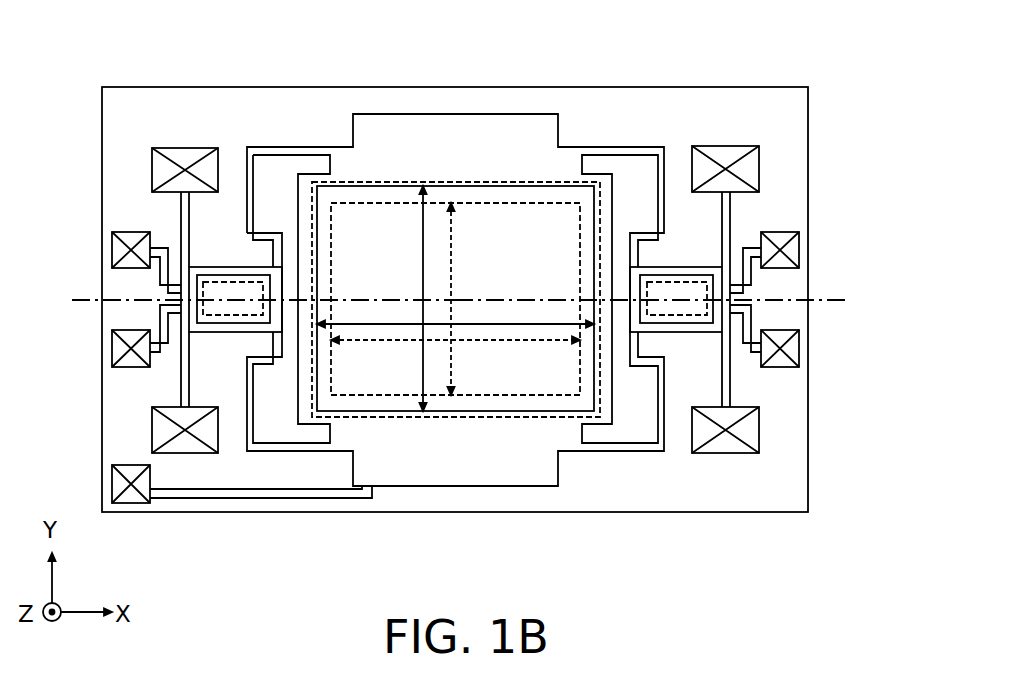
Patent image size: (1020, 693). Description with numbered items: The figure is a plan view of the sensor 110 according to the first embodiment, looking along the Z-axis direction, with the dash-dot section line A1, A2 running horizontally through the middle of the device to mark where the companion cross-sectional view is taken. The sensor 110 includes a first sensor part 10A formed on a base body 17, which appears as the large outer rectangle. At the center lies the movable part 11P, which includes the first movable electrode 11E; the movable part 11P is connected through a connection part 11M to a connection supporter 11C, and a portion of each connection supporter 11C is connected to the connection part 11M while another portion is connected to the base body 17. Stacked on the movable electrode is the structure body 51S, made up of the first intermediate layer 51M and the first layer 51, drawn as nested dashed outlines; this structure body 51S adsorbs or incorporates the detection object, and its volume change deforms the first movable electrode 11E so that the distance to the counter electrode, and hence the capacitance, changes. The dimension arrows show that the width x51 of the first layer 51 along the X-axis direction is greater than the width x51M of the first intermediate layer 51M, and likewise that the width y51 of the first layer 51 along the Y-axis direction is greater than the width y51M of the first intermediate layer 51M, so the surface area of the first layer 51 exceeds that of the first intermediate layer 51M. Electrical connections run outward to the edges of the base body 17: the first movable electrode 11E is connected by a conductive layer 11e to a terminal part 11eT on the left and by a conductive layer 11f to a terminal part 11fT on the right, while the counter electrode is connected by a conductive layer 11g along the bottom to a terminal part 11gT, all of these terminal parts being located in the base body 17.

The first sensor part 10A is at (755, 85).
The sensor 110 is at (818, 75).
The base body 17 is at (757, 493).
The movable part 11P is at (551, 137).
The connection part 11M is at (623, 153).
The connection supporter 11C is at (223, 268).
The first movable electrode 11E is at (385, 181).
The first layer 51 is at (500, 186).
The structure body 51S is at (530, 182).
The first intermediate layer 51M is at (466, 203).
The width x51 is at (538, 327).
The width y51 is at (423, 377).
The width x51M is at (503, 343).
The width y51M is at (451, 347).
The conductive layer 11e is at (180, 312).
The terminal part 11eT is at (118, 352).
The conductive layer 11f is at (733, 311).
The terminal part 11fT is at (795, 352).
The conductive layer 11g is at (210, 495).
The terminal part 11gT is at (128, 499).
The line A1-A2 A1 is at (77, 302).
The line A1- A2 is at (843, 302).